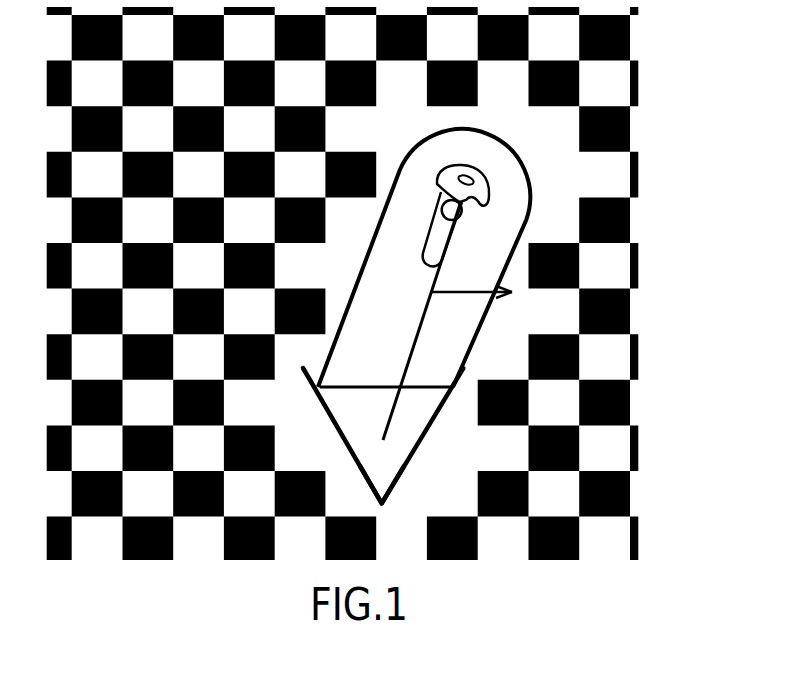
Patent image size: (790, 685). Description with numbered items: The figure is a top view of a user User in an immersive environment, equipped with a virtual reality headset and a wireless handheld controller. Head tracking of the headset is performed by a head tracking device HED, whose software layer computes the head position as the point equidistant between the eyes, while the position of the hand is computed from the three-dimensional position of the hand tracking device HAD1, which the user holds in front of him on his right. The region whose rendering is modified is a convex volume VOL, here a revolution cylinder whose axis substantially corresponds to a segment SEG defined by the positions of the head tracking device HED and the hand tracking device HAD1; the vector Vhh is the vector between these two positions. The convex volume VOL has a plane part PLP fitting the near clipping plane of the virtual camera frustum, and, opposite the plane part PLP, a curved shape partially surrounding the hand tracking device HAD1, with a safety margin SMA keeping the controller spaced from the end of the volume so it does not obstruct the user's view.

The convex volume VOL is at (533, 192).
The plane part PLP is at (386, 376).
The user User is at (383, 435).
The segment SEG is at (425, 312).
The head tracking device HED is at (384, 472).
The hand tracking device HAD1 is at (443, 216).
The safety margin SMA is at (489, 134).
The vector Vhh is at (472, 314).